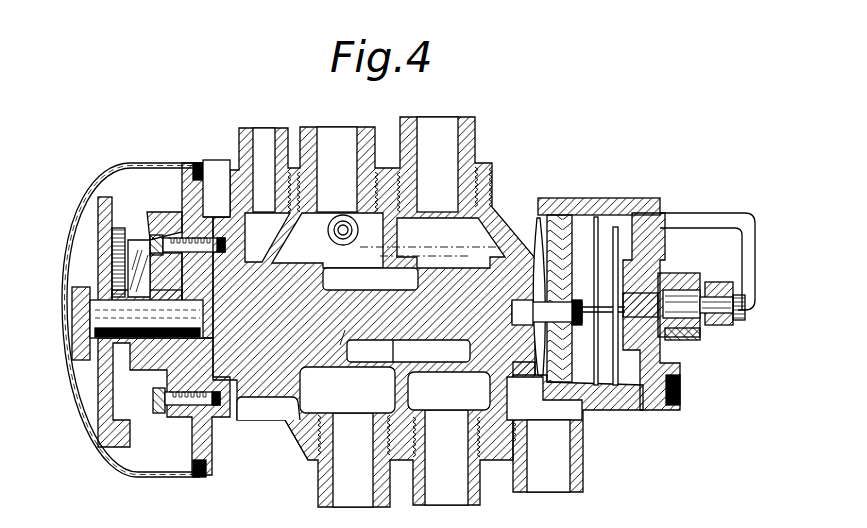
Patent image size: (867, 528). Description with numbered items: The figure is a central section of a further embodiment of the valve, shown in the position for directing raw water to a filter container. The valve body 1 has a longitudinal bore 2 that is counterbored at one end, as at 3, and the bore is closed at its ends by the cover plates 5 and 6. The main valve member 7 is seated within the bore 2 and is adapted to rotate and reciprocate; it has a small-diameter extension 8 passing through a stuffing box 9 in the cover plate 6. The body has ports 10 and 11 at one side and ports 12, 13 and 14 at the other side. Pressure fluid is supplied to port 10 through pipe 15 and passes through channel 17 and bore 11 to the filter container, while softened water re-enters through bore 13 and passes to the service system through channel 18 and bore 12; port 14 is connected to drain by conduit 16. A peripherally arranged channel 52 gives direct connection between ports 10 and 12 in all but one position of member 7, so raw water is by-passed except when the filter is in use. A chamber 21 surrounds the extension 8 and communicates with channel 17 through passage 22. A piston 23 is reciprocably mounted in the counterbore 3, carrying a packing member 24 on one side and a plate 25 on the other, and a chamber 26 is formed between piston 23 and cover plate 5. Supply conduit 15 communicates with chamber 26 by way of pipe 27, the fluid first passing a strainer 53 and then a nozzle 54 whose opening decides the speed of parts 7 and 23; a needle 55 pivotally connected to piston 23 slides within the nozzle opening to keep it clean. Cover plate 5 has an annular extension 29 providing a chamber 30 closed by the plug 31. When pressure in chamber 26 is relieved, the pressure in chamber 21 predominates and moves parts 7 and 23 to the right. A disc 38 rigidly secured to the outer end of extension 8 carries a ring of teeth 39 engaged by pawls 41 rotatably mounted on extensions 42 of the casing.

The valve body 1 is at (493, 213).
The longitudinal bore 2 is at (475, 430).
The counterbore 3 is at (600, 215).
The cover plate 5 is at (668, 370).
The cover plate 6 is at (150, 262).
The main valve member 7 is at (340, 345).
The extension 8 is at (145, 345).
The stuffing box 9 is at (177, 402).
The port 10 is at (314, 240).
The port 11 is at (432, 243).
The port 12 is at (347, 390).
The port 13 is at (449, 391).
The port 14 is at (544, 398).
The pressure fluid supply conduit 15 is at (330, 130).
The drain conduit 16 is at (586, 478).
The channel 17 is at (370, 279).
The channel 18 is at (408, 351).
The chamber 21 is at (240, 427).
The passage 22 is at (222, 215).
The piston 23 is at (556, 384).
The packing member 24 is at (596, 295).
The plate 25 is at (537, 265).
The chamber 26 is at (607, 300).
The pipe 27 is at (690, 213).
The annular extension 29 is at (665, 290).
The chamber 30 is at (700, 290).
The plug 31 is at (697, 325).
The disc 38 is at (106, 430).
The ring of teeth 39 is at (198, 472).
The pawls 41 is at (106, 237).
The extensions 42 is at (180, 243).
The peripherally arranged channel 52 is at (285, 425).
The strainer 53 is at (682, 340).
The nozzle 54 is at (646, 380).
The needle 55 is at (617, 395).